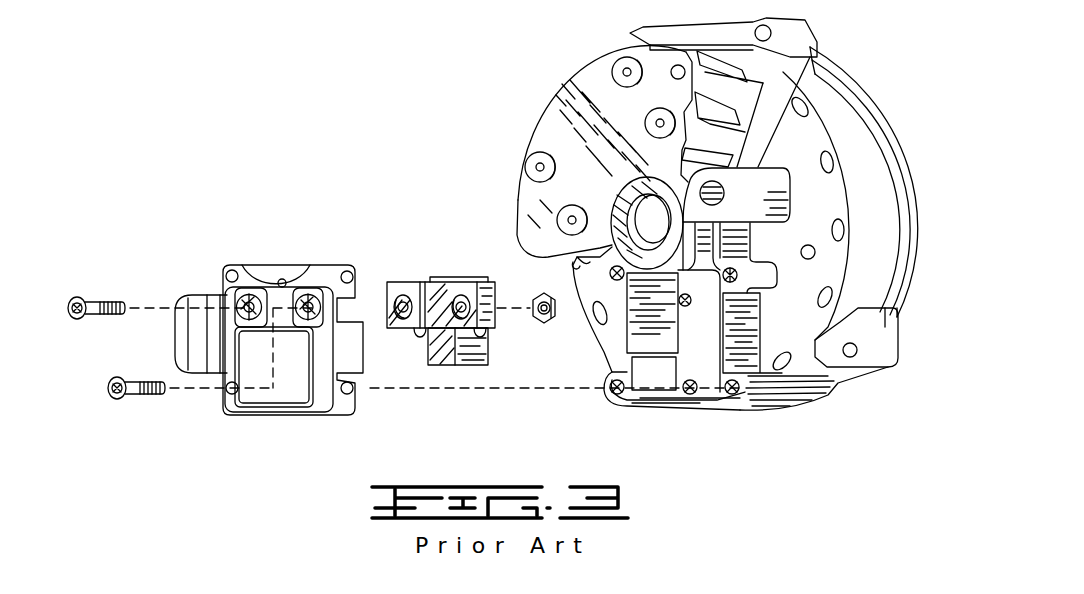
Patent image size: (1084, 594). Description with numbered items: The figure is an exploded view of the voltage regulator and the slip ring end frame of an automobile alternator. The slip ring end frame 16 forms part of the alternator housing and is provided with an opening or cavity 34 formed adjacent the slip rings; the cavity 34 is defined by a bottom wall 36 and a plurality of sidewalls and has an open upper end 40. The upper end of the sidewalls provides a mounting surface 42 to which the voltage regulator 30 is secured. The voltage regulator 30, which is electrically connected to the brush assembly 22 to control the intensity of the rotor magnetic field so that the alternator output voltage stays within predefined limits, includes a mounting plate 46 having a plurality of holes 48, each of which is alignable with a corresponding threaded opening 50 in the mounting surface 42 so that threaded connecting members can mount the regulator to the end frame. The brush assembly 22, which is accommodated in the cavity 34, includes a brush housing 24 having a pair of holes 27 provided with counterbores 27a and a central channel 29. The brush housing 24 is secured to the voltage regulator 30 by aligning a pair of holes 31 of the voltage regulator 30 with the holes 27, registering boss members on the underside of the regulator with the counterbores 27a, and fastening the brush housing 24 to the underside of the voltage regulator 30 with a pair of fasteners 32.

The slip ring end frame 16 is at (580, 78).
The brush assembly 22 is at (503, 324).
The brush housing 24 is at (488, 357).
The holes 27 is at (404, 298).
The counterbores 27a is at (399, 303).
The central channel 29 is at (437, 322).
The voltage regulator 30 is at (275, 392).
The holes 31 is at (246, 294).
The fasteners 32 is at (105, 316).
The cavity 34 is at (672, 368).
The bottom wall 36 is at (700, 350).
The open upper end 40 is at (636, 335).
The mounting surface 42 is at (665, 408).
The mounting plate 46 is at (262, 266).
The holes 48 is at (228, 276).
The threaded opening 50 is at (733, 283).